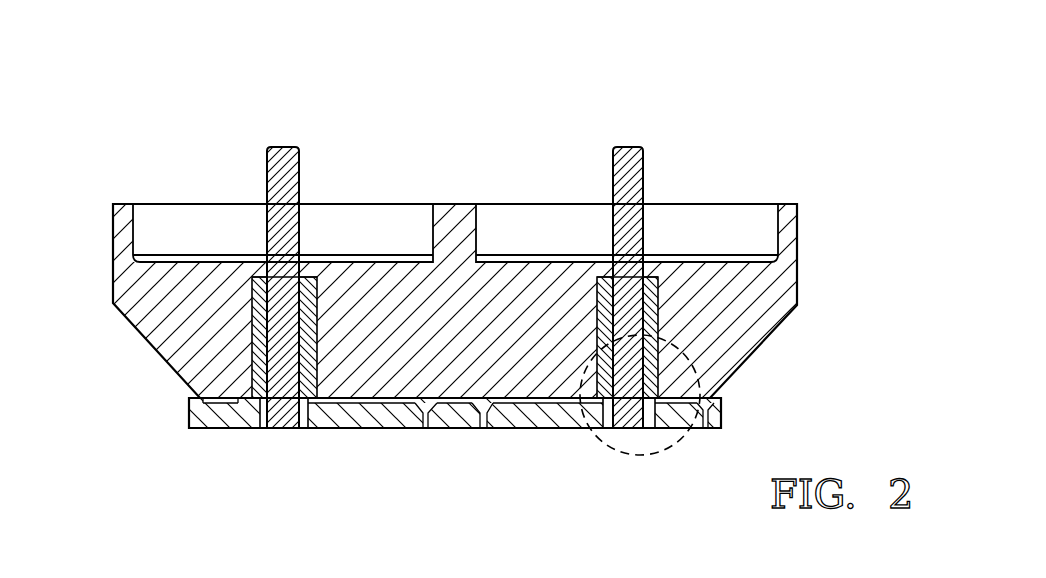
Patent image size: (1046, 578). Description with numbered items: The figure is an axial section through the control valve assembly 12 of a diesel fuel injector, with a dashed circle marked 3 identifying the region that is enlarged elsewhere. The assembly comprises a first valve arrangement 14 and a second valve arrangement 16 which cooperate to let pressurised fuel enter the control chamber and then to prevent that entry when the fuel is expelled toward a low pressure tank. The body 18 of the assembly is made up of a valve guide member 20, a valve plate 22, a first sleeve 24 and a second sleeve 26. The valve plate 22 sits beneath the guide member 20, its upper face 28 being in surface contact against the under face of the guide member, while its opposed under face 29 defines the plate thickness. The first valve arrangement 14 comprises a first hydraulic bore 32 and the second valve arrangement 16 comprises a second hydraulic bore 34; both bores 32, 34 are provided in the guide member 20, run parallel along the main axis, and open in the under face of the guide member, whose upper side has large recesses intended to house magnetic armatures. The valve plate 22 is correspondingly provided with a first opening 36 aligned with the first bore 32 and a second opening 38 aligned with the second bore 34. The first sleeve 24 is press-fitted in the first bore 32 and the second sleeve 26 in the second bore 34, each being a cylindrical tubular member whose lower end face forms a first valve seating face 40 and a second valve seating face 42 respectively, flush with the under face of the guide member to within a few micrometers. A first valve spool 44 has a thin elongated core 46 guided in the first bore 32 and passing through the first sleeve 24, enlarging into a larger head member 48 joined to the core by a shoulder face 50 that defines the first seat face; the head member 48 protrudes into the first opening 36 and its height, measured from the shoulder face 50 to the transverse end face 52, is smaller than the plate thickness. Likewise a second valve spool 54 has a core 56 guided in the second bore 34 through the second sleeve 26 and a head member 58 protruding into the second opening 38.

The control valve assembly 12 is at (522, 301).
The first valve arrangement 14 is at (250, 301).
The second valve arrangement 16 is at (610, 295).
The body 18 is at (531, 316).
The valve guide member 20 is at (792, 256).
The valve plate 22 is at (722, 402).
The first sleeve 24 is at (257, 339).
The second sleeve 26 is at (705, 429).
The upper face 28 is at (245, 392).
The under face 29 is at (227, 429).
The first hydraulic bore 32 is at (258, 320).
The second hydraulic bore 34 is at (645, 307).
The first opening 36 is at (322, 429).
The second opening 38 is at (670, 429).
The first valve seating face 40 is at (314, 338).
The second valve seating face 42 is at (610, 392).
The first valve spool 44 is at (296, 178).
The core 46 is at (285, 265).
The head member 48 is at (281, 429).
The shoulder face 50 is at (266, 429).
The transverse end face 52 is at (272, 429).
The second valve spool 54 is at (615, 182).
The core 56 is at (622, 265).
The head member 58 is at (625, 429).
The detail view indicator 3 is at (580, 446).